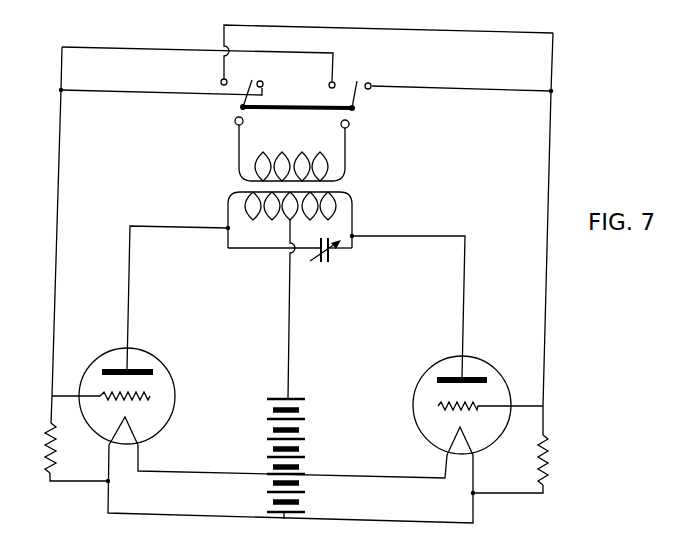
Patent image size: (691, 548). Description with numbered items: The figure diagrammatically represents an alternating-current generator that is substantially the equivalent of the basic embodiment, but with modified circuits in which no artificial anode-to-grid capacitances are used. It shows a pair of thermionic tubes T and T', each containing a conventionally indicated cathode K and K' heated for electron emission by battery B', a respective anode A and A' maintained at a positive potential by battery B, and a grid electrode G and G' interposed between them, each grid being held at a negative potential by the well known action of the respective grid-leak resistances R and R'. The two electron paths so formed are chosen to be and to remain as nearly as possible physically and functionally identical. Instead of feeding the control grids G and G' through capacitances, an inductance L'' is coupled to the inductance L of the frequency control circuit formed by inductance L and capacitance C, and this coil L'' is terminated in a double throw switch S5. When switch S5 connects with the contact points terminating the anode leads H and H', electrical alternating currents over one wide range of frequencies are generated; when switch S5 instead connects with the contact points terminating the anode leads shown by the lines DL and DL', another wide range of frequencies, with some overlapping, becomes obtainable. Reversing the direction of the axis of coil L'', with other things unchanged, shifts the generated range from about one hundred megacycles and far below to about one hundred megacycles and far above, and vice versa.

The anode lead H is at (387, 48).
The anode lead H' is at (198, 55).
The anode lead DL is at (458, 78).
The anode lead DL' is at (162, 80).
The double throw switch S5 is at (307, 110).
The inductance L'' is at (317, 153).
The inductance L is at (307, 218).
The capacitance C is at (337, 265).
The thermionic tube T is at (466, 402).
The thermionic tube T' is at (121, 391).
The anode A is at (443, 361).
The anode A' is at (139, 353).
The grid electrode G is at (463, 390).
The grid electrode G' is at (125, 386).
The cathode K is at (434, 441).
The cathode K' is at (150, 430).
The grid-leak resistance R is at (556, 460).
The grid-leak resistance R' is at (35, 448).
The battery B is at (299, 433).
The battery B' is at (299, 496).